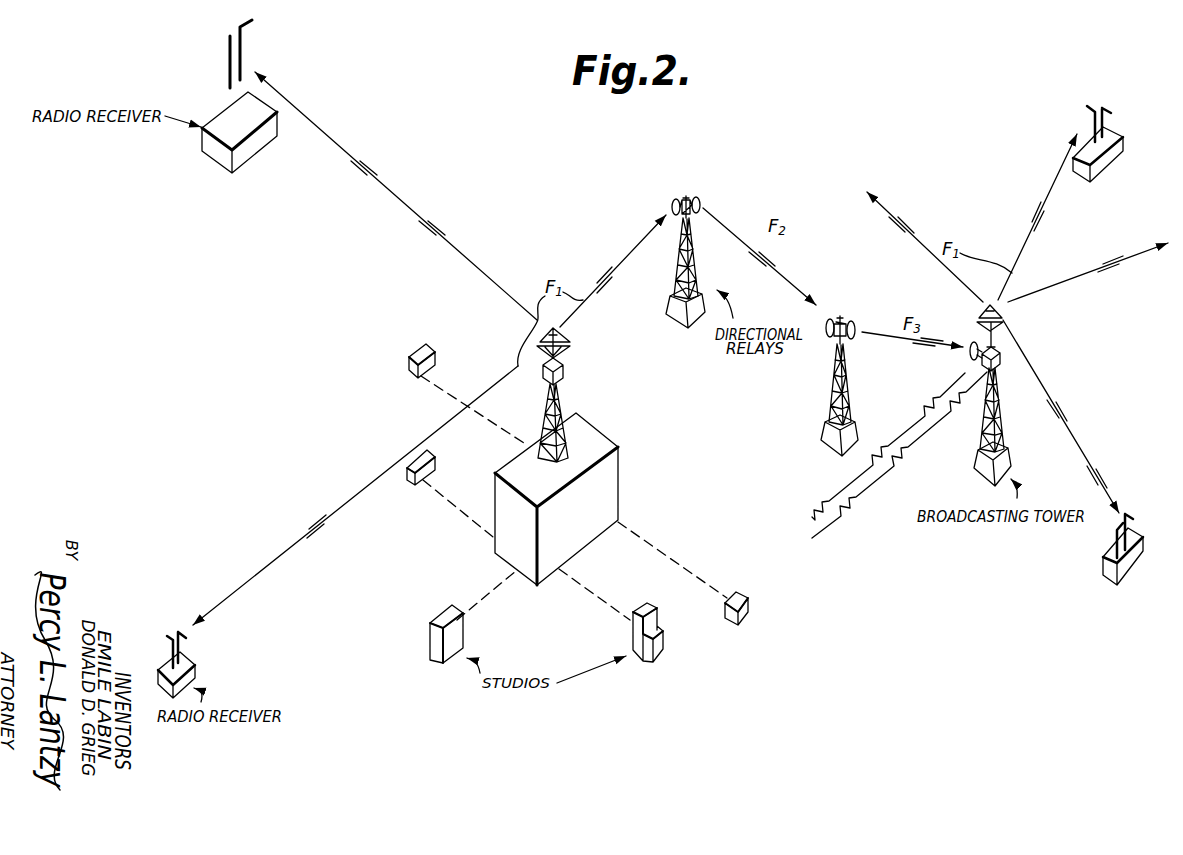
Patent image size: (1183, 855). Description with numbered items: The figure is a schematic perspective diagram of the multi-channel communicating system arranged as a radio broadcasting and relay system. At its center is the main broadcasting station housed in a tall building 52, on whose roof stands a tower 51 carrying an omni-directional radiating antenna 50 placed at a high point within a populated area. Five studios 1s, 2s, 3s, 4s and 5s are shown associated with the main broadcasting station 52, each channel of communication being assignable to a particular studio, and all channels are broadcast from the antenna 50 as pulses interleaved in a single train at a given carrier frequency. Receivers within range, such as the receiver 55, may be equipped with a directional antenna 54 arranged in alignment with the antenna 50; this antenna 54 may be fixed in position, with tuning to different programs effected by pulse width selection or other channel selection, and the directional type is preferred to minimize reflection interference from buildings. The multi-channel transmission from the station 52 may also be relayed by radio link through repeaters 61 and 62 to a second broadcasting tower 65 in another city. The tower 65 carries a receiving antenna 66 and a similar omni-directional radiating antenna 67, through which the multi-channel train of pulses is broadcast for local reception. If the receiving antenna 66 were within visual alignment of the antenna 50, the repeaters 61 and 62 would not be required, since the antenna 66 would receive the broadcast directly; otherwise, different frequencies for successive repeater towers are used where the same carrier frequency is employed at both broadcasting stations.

The omni-directional radiating antenna 50 is at (568, 343).
The tower 51 is at (557, 400).
The tall building 52 is at (620, 448).
The directional antenna 54 is at (228, 40).
The receiver 55 is at (211, 141).
The repeater 61 is at (692, 200).
The repeater 62 is at (845, 319).
The second broadcasting tower 65 is at (996, 369).
The receiving antenna 66 is at (977, 346).
The omni-directional radiating antenna 67 is at (1003, 314).
The studio 1s is at (436, 350).
The studio 2s is at (437, 460).
The studio 3s is at (430, 641).
The studio 4s is at (633, 645).
The studio 5s is at (749, 601).